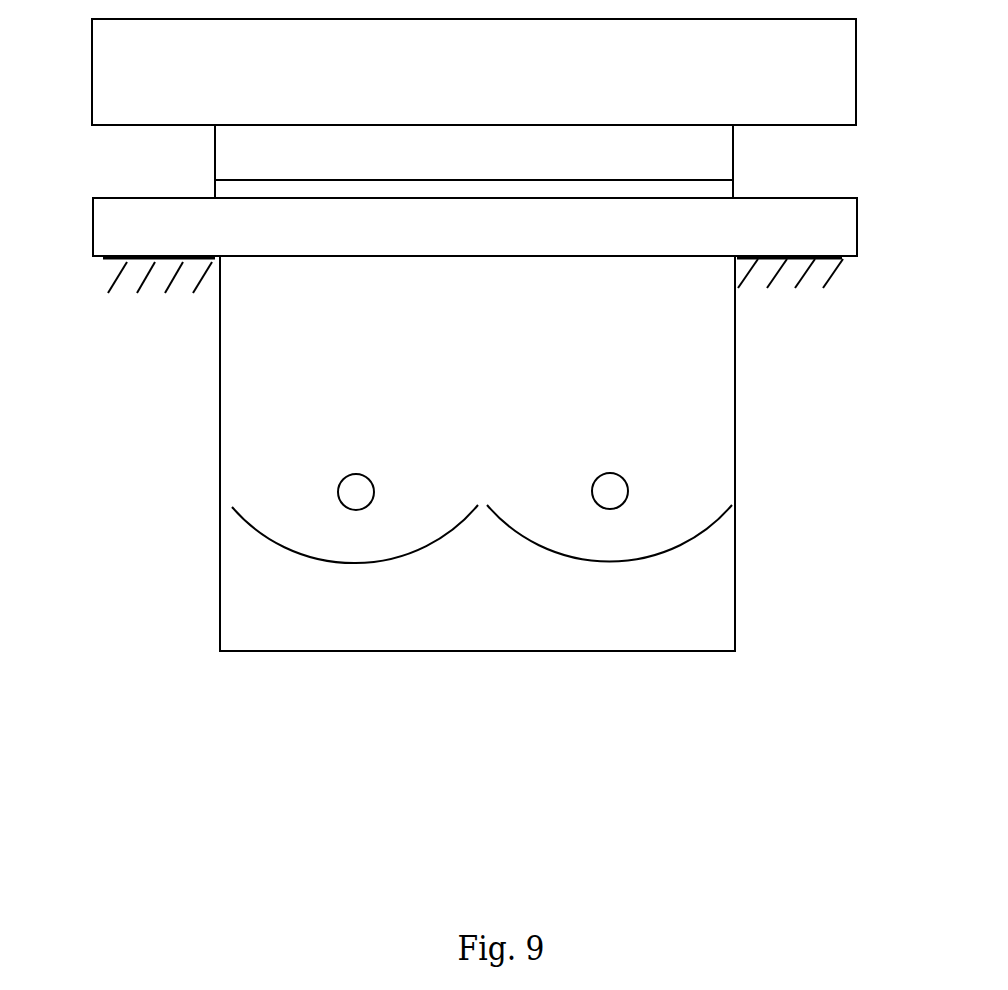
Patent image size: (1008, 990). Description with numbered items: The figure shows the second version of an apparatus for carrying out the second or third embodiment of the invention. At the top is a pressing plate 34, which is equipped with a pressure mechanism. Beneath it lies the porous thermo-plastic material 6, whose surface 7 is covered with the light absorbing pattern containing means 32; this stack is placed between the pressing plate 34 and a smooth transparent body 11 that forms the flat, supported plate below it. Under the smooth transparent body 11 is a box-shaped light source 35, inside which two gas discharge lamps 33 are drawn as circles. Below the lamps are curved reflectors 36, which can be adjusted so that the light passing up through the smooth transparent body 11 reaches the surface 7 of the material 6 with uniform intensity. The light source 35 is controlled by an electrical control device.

The pressing plate 34 is at (436, 101).
The porous thermo-plastic material 6 is at (417, 161).
The surface 7 is at (524, 94).
The light absorbing pattern containing means 32 is at (571, 151).
The smooth transparent body 11 is at (468, 288).
The light source 35 is at (515, 453).
The gas discharge lamp 33 is at (515, 454).
The reflectors 36 is at (482, 569).